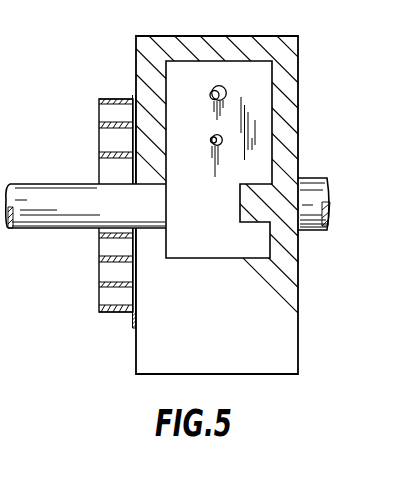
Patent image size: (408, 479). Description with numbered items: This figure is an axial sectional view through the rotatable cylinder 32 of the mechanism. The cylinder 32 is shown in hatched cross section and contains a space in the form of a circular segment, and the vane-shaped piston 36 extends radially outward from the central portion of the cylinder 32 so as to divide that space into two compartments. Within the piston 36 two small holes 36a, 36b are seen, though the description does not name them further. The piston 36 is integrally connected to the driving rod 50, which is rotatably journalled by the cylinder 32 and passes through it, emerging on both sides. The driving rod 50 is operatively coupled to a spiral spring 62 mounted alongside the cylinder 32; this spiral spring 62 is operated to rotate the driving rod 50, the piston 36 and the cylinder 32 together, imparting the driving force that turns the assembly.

The rotatable cylinder 32 is at (298, 100).
The vane-shaped piston 36 is at (243, 67).
The lower hole 36a is at (208, 146).
The upper hole 36b is at (211, 87).
The driving rod 50 is at (63, 192).
The spiral spring 62 is at (99, 298).